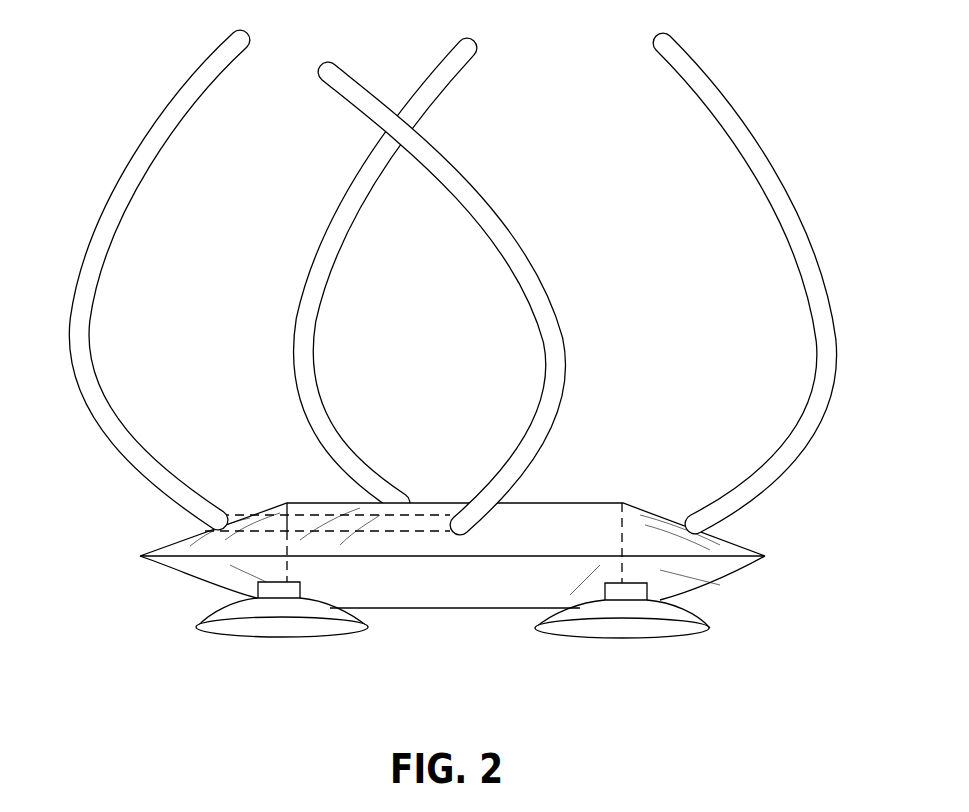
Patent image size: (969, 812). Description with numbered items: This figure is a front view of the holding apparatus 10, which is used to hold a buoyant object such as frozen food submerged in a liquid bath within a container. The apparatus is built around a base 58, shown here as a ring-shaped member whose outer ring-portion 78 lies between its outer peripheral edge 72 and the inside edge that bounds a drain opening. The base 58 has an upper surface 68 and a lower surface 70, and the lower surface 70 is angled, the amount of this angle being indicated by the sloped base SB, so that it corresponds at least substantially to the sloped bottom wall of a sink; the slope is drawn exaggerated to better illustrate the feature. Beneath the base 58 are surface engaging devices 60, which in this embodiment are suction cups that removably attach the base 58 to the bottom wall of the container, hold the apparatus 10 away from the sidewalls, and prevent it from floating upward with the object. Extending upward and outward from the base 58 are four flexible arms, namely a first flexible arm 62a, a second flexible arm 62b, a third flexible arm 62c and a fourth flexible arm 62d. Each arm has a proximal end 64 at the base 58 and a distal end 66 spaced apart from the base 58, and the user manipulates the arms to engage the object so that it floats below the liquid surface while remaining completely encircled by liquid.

The holding apparatus 10 is at (770, 78).
The base 58 is at (385, 593).
The surface engaging devices 60 is at (263, 615).
The first flexible arm 62a is at (110, 228).
The second flexible arm 62b is at (362, 185).
The third flexible arm 62c is at (550, 328).
The fourth flexible arm 62d is at (795, 237).
The proximal end 64 is at (205, 527).
The distal end 66 is at (222, 37).
The upper surface 68 is at (577, 503).
The lower surface 70 is at (500, 610).
The outer peripheral edge 72 is at (767, 570).
The outer ring-portion 78 is at (645, 512).
The sloped base SB is at (810, 637).